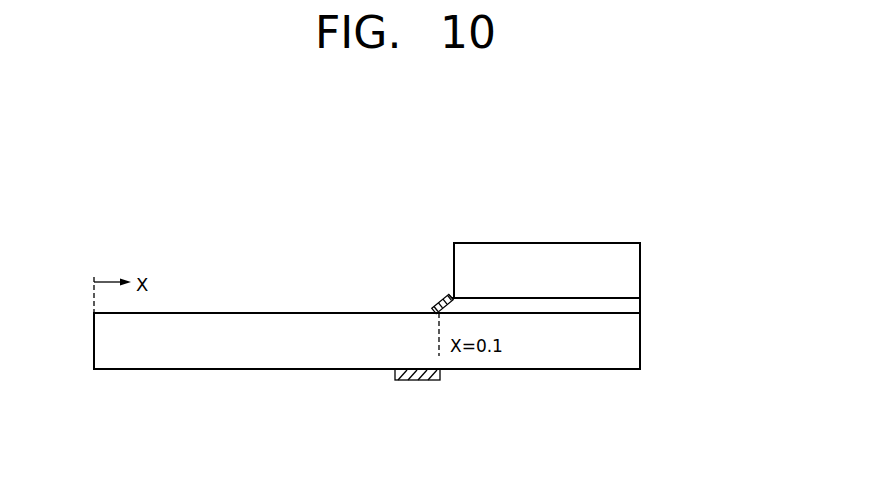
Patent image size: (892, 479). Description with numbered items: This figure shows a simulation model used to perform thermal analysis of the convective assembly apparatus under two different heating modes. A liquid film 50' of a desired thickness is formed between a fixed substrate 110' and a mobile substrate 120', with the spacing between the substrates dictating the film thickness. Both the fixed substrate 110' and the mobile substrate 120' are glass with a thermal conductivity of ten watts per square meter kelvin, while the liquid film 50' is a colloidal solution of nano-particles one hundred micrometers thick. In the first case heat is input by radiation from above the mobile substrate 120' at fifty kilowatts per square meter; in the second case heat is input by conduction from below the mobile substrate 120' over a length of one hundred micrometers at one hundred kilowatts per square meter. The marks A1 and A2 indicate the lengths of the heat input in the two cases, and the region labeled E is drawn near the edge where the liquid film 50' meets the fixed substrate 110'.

The fixed substrate 110' is at (577, 270).
The liquid film 50' is at (571, 306).
The mobile substrate 120' is at (397, 341).
The edge region E is at (430, 293).
The length of heat input in Case 1 A1 is at (412, 381).
The length of heat input in Case 2 A2 is at (446, 296).